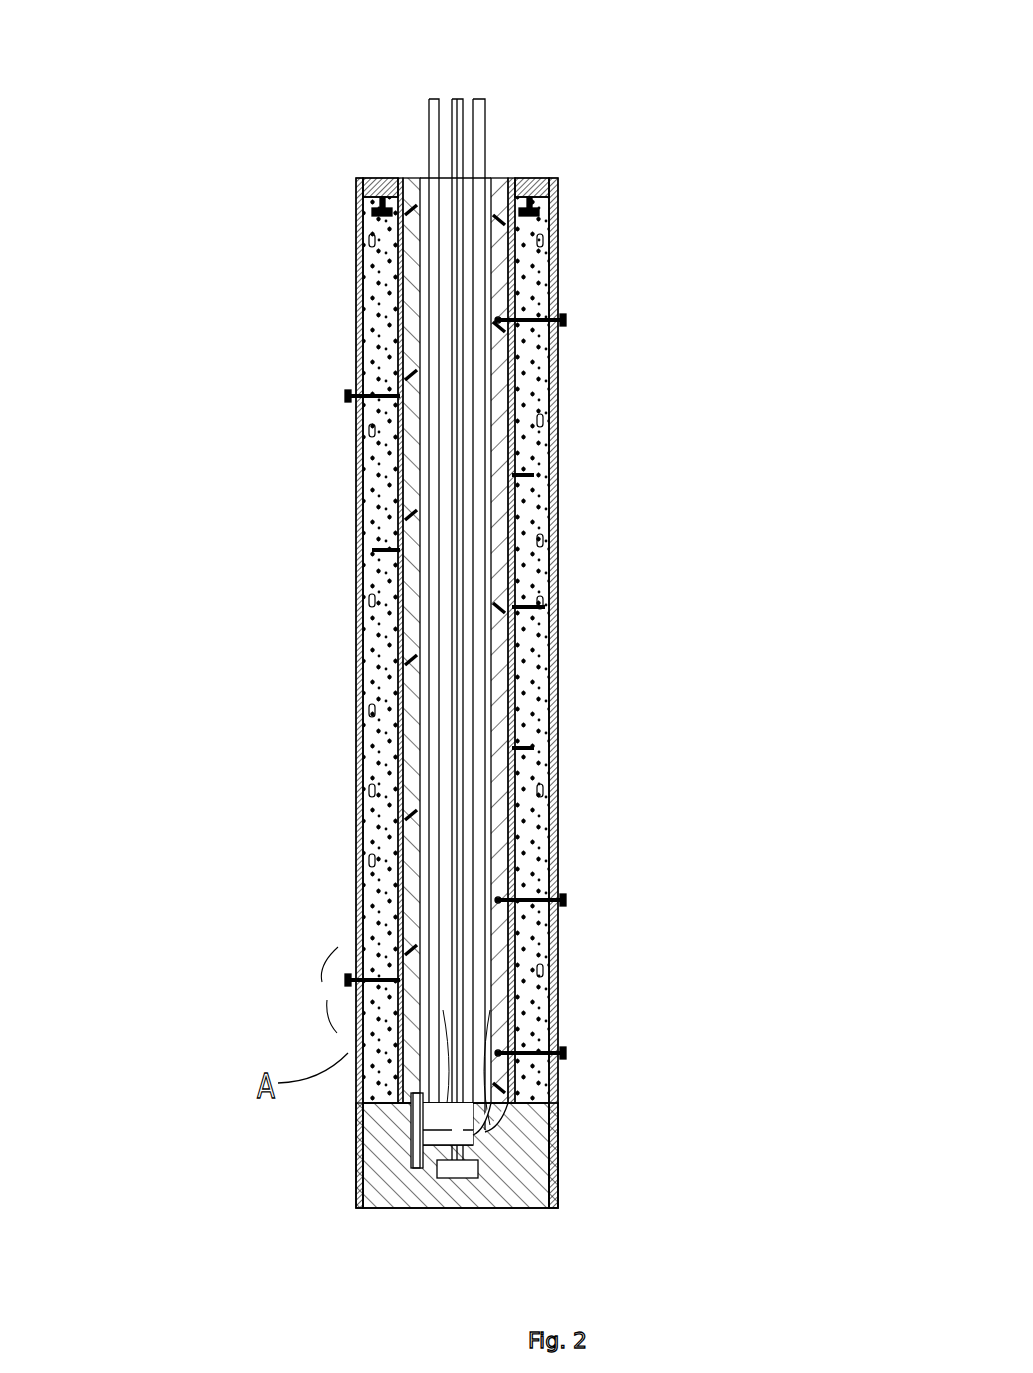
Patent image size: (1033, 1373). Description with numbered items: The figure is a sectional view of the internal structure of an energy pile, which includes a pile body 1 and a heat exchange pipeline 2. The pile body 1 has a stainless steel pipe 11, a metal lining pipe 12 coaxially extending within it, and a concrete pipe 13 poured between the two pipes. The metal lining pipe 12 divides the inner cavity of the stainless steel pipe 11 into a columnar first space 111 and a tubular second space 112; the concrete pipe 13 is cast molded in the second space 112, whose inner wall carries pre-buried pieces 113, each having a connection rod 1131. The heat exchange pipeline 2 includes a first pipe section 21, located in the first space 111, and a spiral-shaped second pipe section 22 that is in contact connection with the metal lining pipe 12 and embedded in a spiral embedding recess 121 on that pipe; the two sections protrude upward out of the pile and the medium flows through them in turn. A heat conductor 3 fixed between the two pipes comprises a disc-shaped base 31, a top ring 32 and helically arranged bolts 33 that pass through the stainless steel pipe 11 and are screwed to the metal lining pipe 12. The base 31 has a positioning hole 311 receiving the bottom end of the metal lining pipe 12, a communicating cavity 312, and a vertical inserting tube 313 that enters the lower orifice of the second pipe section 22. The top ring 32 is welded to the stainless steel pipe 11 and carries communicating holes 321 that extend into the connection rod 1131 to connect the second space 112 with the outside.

The pile body 1 is at (699, 623).
The stainless steel pipe 11 is at (558, 690).
The first space 111 is at (479, 188).
The second space 112 is at (387, 322).
The pre-buried piece 113 is at (350, 392).
The connection rod 1131 is at (366, 197).
The metal lining pipe 12 is at (413, 757).
The embedding recess 121 is at (407, 517).
The concrete pipe 13 is at (357, 855).
The heat exchange pipeline 2 is at (226, 573).
The first pipe section 21 is at (429, 100).
The second pipe section 22 is at (410, 660).
The heat conductor 3 is at (679, 138).
The base 31 is at (550, 1115).
The positioning hole 311 is at (552, 1180).
The communicating cavity 312 is at (460, 1178).
The inserting tube 313 is at (404, 1100).
The top ring 32 is at (550, 178).
The communicating hole 321 is at (378, 178).
The bolt 33 is at (558, 303).